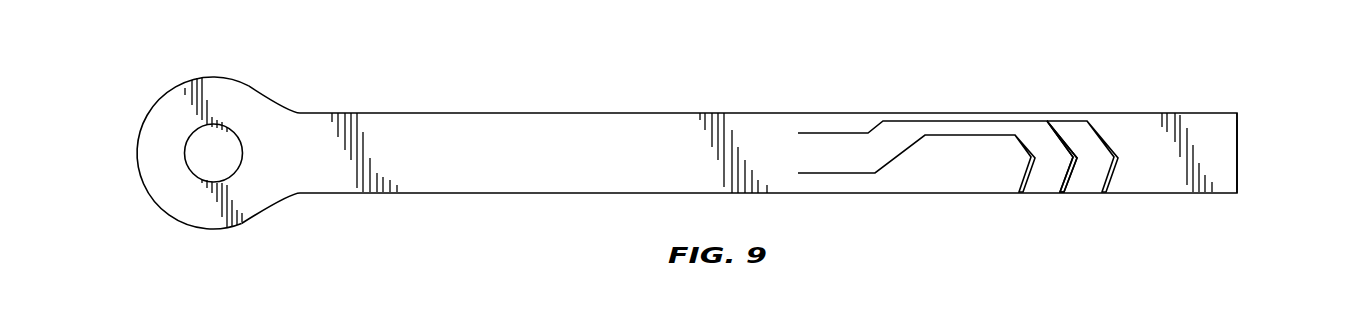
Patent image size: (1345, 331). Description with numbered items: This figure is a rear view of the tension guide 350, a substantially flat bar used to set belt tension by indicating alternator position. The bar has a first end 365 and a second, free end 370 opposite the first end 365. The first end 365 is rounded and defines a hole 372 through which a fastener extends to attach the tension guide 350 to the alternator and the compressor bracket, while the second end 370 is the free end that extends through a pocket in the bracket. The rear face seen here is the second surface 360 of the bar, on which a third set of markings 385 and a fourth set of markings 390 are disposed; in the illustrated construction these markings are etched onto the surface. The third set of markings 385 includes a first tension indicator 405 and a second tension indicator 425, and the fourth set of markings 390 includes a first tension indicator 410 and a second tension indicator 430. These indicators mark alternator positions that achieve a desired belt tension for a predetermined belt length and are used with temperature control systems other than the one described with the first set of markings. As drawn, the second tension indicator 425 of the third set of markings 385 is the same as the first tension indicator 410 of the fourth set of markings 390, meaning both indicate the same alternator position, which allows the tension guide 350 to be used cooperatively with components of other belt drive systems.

The tension guide 350 is at (542, 86).
The first end 365 is at (138, 153).
The hole 372 is at (212, 140).
The third set of markings 385 is at (947, 121).
The fourth set of markings 390 is at (946, 136).
The second tension indicator 430 is at (1022, 175).
The first tension indicator 410 is at (1063, 182).
The second tension indicator 425 is at (1062, 156).
The first tension indicator 405 is at (1113, 177).
The second surface 360 is at (1213, 143).
The second end 370 is at (1238, 155).